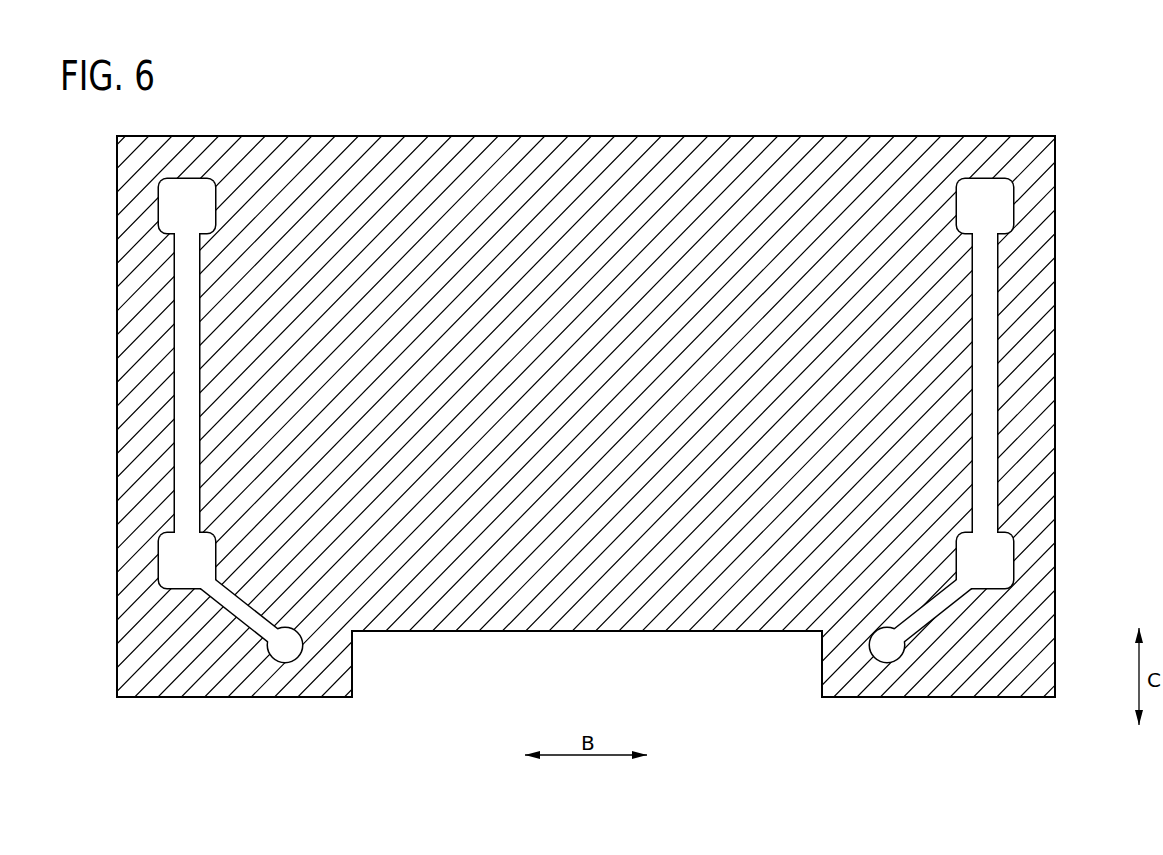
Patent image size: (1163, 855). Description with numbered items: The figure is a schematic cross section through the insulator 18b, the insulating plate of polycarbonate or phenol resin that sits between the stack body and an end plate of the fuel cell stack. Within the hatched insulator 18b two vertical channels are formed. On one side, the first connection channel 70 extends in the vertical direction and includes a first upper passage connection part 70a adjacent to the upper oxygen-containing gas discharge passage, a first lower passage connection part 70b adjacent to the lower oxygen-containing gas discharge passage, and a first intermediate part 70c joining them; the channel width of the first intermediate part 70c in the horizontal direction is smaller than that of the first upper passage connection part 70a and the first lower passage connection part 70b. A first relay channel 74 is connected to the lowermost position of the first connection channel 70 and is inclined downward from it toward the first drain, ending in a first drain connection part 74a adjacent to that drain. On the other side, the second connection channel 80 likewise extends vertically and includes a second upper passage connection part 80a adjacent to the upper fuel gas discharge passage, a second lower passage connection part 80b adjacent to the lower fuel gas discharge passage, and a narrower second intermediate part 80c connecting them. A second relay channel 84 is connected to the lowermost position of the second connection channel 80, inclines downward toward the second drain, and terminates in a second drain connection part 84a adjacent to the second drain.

The insulator 18b is at (388, 98).
The first connection channel 70 is at (131, 383).
The first upper passage connection part 70a is at (180, 211).
The first lower passage connection part 70b is at (186, 563).
The first intermediate part 70c is at (185, 279).
The first relay channel 74 is at (240, 605).
The first drain connection part 74a is at (285, 650).
The second connection channel 80 is at (1039, 383).
The second upper passage connection part 80a is at (992, 209).
The second lower passage connection part 80b is at (987, 563).
The second intermediate part 80c is at (987, 280).
The second relay channel 84 is at (933, 605).
The second drain connection part 84a is at (887, 650).